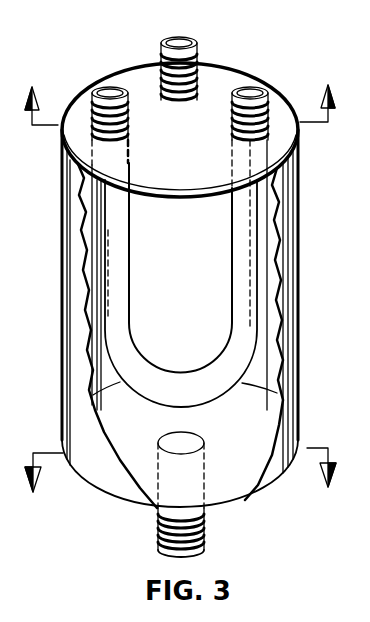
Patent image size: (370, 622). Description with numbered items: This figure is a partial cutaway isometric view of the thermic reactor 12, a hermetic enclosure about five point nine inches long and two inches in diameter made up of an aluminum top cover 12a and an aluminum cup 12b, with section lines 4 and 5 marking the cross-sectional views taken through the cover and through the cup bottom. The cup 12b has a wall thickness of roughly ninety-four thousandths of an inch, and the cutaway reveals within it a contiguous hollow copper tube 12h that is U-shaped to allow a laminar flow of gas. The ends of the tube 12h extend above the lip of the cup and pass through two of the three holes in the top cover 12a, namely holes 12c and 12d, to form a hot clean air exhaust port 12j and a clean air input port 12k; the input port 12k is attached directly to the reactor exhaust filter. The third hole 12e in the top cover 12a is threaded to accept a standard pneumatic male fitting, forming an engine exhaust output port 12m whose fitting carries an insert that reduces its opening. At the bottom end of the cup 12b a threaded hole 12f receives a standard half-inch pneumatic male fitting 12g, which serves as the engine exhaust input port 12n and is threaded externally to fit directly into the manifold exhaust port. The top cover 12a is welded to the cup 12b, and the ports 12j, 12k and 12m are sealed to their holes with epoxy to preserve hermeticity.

The section line 4- 4 is at (180, 92).
The section line 5- 5 is at (180, 483).
The thermic reactor 12 is at (317, 307).
The top cover 12a is at (233, 82).
The cup 12b is at (282, 213).
The hole 12c is at (265, 133).
The hole 12d is at (92, 140).
The hole 12e is at (160, 90).
The hole 12f is at (157, 510).
The pneumatic male fitting 12g is at (204, 523).
The hollow tube 12h is at (235, 260).
The hot clean air exhaust port 12j is at (234, 104).
The clean air input port 12k is at (125, 95).
The engine exhaust output port 12m is at (198, 57).
The engine exhaust input port 12n is at (192, 552).